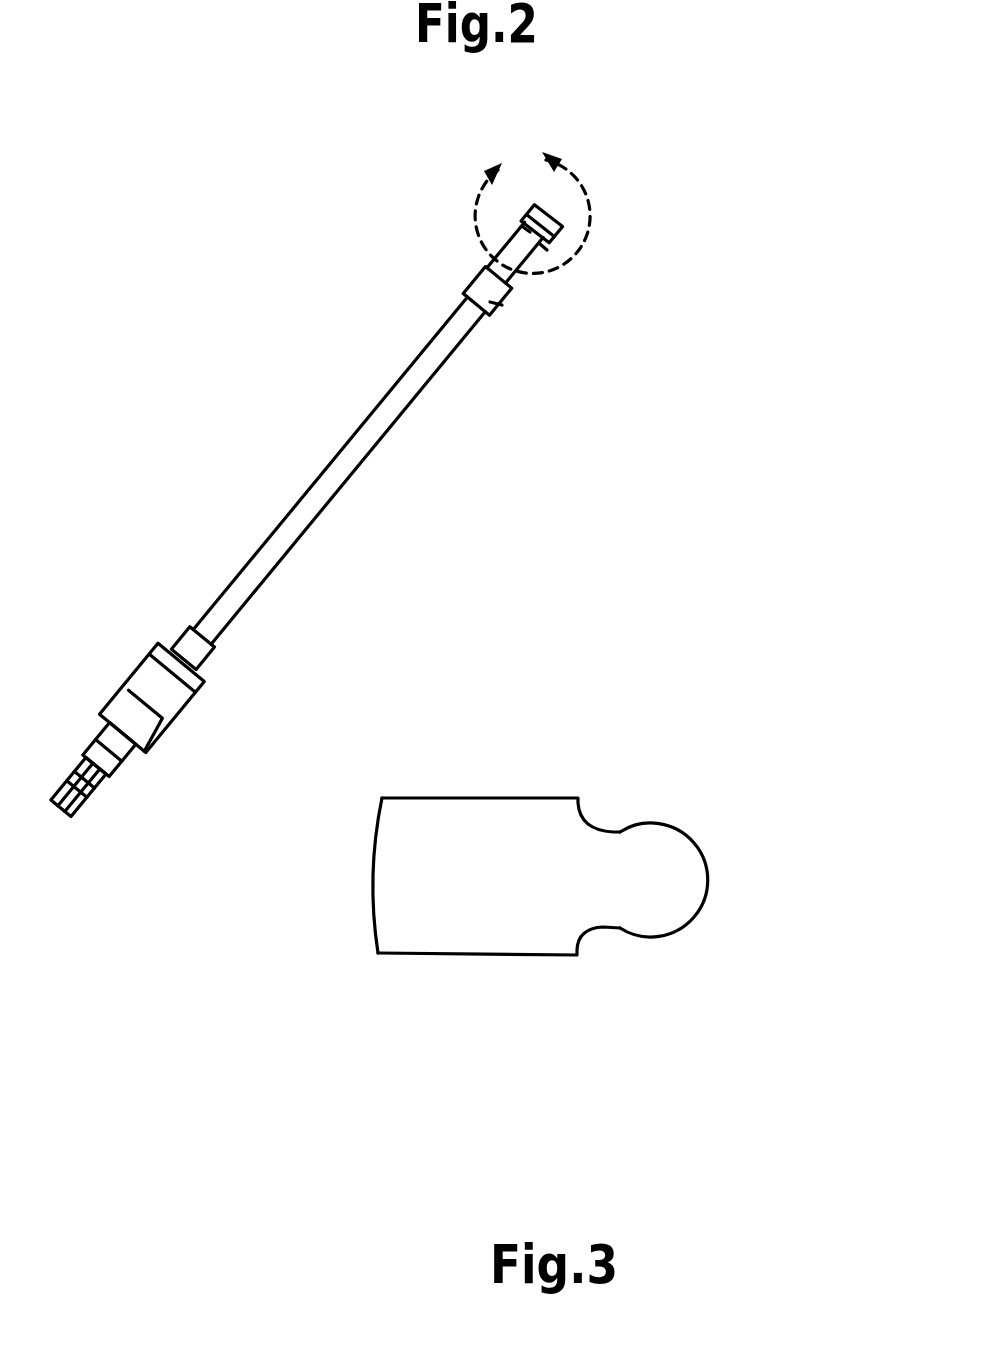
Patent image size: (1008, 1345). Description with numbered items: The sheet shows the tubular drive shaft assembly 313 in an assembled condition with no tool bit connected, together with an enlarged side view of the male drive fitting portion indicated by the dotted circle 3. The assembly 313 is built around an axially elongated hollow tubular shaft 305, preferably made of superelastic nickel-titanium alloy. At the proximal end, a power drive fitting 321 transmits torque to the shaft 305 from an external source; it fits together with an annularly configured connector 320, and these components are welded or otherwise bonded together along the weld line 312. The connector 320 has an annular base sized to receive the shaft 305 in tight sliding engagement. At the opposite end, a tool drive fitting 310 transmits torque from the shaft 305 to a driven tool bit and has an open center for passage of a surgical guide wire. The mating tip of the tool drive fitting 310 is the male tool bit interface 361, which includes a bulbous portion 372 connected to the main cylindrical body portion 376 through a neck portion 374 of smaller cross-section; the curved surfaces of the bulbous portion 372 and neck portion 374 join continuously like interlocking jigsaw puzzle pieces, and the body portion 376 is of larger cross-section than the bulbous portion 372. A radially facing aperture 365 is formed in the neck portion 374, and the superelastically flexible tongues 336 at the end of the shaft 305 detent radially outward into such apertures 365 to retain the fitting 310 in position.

In FIG. 2, the dotted circle 3 is at (532, 206).
In FIG. 2, the tubular shaft 305 is at (290, 542).
In FIG. 2, the tool drive fitting 310 is at (520, 283).
In FIG. 3, the tool drive fitting 310 is at (500, 937).
In FIG. 2, the weld line 312 is at (493, 272).
In FIG. 2, the drive shaft assembly 313 is at (268, 406).
In FIG. 2, the connector 320 is at (510, 285).
In FIG. 2, the power drive fitting 321 is at (165, 708).
In FIG. 2, the tongues 336 is at (523, 227).
In FIG. 3, the tongues 336 is at (613, 832).
In FIG. 2, the male tool bit interface 361 is at (552, 222).
In FIG. 3, the male tool bit interface 361 is at (689, 858).
In FIG. 2, the aperture 365 is at (547, 244).
In FIG. 3, the bulbous portion 372 is at (682, 897).
In FIG. 3, the neck portion 374 is at (650, 937).
In FIG. 3, the cylindrical body portion 376 is at (458, 830).